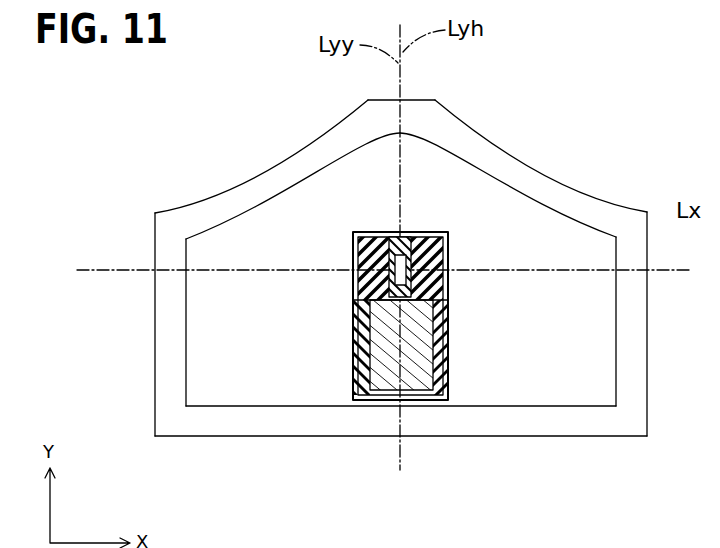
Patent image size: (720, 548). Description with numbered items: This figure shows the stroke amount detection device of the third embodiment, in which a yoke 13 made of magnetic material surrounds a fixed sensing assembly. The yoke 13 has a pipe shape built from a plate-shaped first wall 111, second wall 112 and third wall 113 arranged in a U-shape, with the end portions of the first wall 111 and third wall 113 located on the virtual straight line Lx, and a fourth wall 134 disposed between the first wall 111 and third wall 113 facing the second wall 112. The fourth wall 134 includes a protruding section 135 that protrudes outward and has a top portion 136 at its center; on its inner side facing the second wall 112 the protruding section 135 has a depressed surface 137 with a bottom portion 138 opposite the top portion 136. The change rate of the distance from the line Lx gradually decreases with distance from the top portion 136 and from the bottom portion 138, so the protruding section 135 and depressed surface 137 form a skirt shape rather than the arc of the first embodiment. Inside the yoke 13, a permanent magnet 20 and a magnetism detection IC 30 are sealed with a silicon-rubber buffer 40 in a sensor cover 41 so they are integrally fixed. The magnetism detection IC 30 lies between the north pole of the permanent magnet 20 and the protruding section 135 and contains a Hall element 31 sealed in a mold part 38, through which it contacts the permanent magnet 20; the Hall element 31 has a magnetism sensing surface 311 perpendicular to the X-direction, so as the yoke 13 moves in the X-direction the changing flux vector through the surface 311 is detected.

The yoke 13 is at (403, 276).
The first wall 111 is at (162, 392).
The second wall 112 is at (477, 430).
The third wall 113 is at (642, 375).
The fourth wall 134 is at (215, 213).
The protruding section 135 is at (492, 167).
The top portion 136 is at (410, 114).
The depressed surface 137 is at (493, 198).
The bottom portion 138 is at (413, 145).
The magnetism detection IC 30 is at (399, 322).
The sensor cover 41 is at (355, 235).
The buffer 40 is at (358, 256).
The mold part 38 is at (357, 290).
The Hall element 31 is at (440, 274).
The magnetism sensing surface 311 is at (443, 285).
The permanent magnet 20 is at (372, 367).